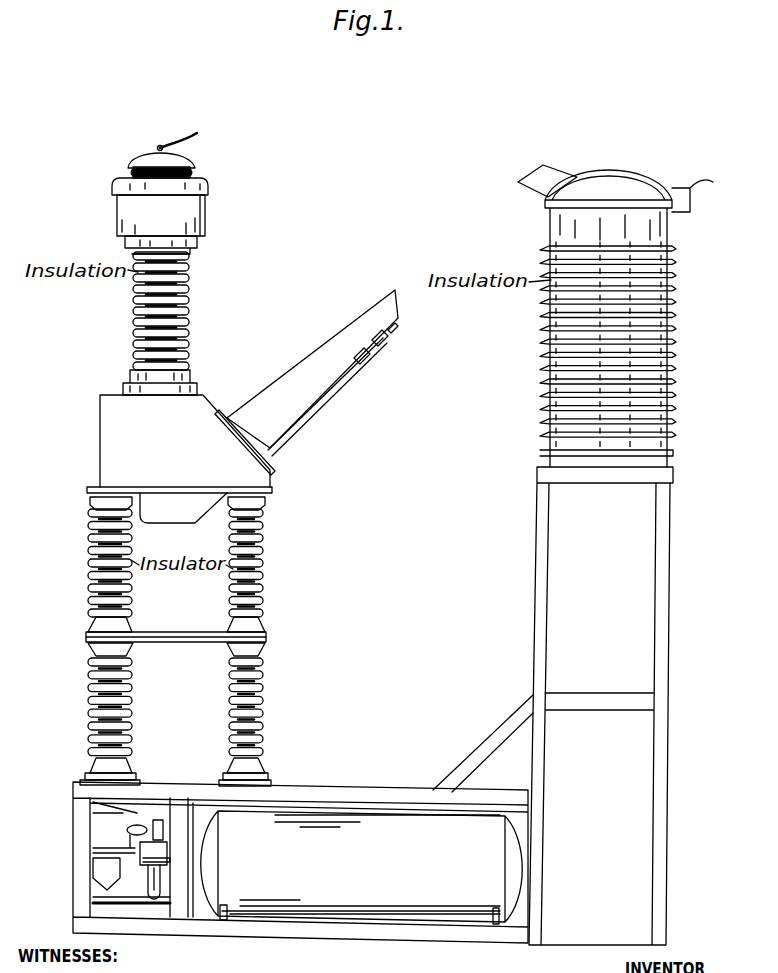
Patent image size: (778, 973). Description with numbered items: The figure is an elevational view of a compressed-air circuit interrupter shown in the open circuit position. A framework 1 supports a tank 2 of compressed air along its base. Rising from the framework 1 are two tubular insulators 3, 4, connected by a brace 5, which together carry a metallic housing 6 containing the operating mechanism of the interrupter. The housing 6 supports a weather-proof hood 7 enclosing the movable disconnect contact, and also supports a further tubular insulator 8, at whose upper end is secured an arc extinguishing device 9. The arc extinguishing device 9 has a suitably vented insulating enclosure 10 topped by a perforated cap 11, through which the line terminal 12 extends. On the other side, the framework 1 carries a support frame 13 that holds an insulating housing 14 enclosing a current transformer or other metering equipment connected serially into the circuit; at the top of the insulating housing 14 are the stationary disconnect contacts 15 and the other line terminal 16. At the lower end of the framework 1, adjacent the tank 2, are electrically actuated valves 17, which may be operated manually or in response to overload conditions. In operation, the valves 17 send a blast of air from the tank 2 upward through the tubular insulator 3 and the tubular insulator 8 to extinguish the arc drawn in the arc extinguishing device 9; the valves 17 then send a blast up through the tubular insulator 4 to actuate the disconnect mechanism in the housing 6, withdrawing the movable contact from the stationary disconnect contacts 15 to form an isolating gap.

The framework 1 is at (298, 788).
The tank 2 is at (308, 925).
The tubular insulator 3 is at (132, 600).
The tubular insulator 4 is at (262, 606).
The brace 5 is at (168, 637).
The metallic housing 6 is at (100, 437).
The weather-proof hood 7 is at (323, 348).
The tubular insulator 8 is at (190, 314).
The arc extinguishing device 9 is at (167, 221).
The insulating enclosure 10 is at (207, 214).
The perforated cap 11 is at (197, 165).
The line terminal 12 is at (199, 137).
The support frame 13 is at (535, 621).
The insulating housing 14 is at (674, 362).
The stationary disconnect contacts 15 is at (560, 170).
The line terminal 16 is at (700, 190).
The electrically actuated valves 17 is at (131, 852).